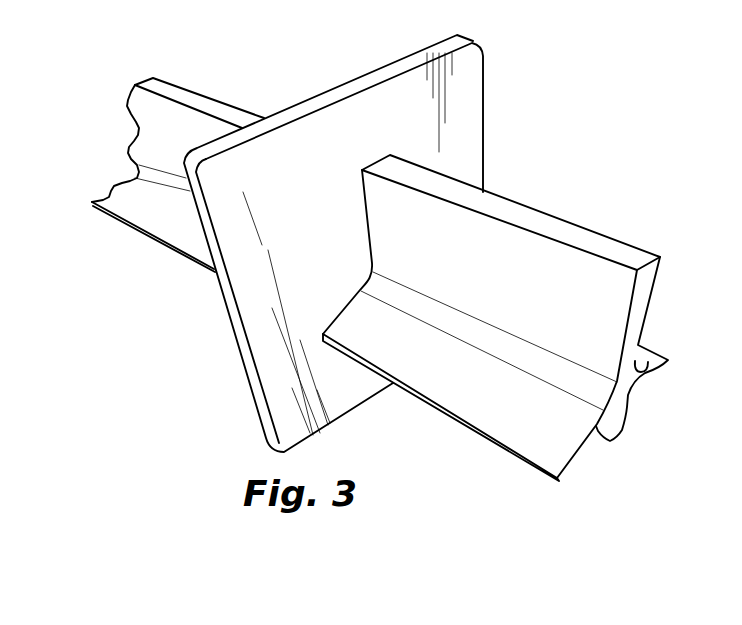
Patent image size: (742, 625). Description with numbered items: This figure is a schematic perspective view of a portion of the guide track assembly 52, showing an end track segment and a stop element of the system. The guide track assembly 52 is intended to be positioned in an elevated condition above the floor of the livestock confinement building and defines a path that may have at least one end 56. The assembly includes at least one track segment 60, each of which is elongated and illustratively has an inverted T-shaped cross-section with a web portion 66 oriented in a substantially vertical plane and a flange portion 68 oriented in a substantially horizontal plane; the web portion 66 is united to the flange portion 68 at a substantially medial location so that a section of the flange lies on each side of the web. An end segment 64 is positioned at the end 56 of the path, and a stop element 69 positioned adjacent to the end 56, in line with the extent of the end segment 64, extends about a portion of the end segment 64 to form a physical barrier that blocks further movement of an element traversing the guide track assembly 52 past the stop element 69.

The guide track assembly 52 is at (141, 177).
The end of the path 56 is at (527, 323).
The track segment 60 is at (175, 250).
The end segment 64 is at (505, 200).
The web portion 66 is at (642, 288).
The flange portion 68 is at (570, 455).
The stop element 69 is at (472, 63).